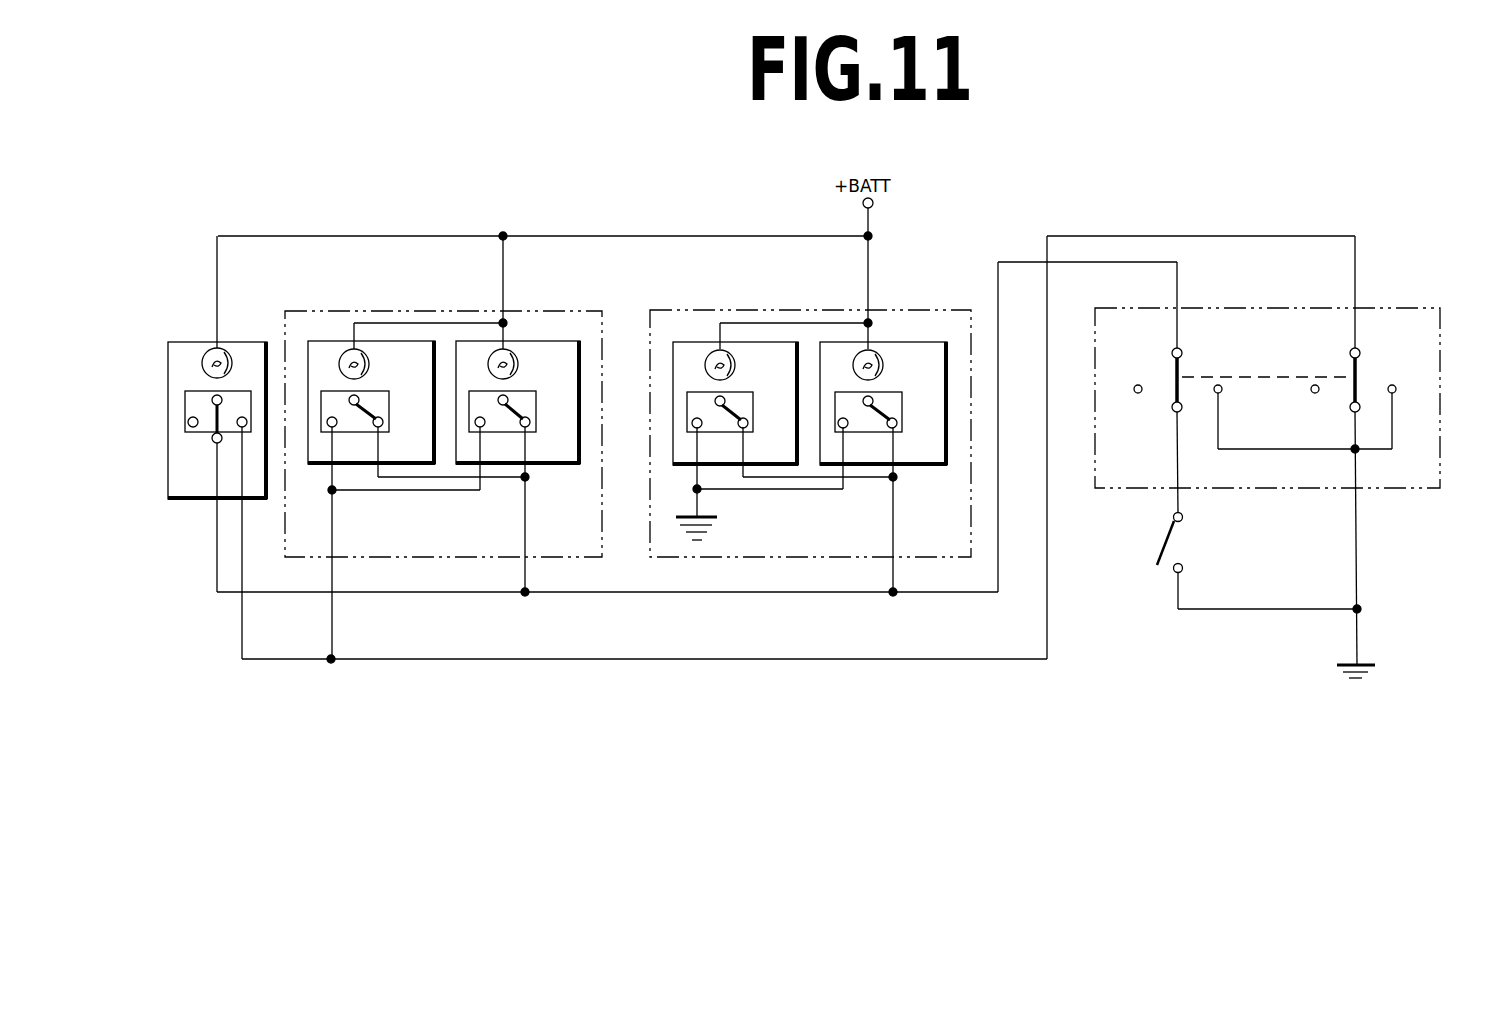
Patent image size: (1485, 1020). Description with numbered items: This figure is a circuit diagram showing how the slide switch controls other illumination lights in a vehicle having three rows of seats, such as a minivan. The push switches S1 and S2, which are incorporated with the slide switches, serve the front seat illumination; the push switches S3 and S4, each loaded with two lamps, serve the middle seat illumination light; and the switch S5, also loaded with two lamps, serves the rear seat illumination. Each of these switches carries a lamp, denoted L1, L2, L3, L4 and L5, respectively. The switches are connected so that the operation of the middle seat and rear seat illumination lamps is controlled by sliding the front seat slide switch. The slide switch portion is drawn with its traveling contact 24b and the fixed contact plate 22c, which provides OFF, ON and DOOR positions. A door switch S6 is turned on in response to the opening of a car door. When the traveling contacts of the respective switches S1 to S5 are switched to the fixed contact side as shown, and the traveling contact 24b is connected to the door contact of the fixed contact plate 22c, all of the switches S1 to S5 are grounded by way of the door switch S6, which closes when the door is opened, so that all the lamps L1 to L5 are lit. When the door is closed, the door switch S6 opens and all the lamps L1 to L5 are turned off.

The push switch S1 is at (922, 342).
The push switch S2 is at (686, 342).
The push switch S3 is at (545, 341).
The push switch S4 is at (332, 341).
The switch S5 is at (196, 341).
The door switch S6 is at (1257, 561).
The lamp L1 is at (881, 372).
The lamp L2 is at (733, 372).
The lamp L3 is at (516, 371).
The lamp L4 is at (367, 371).
The lamp L5 is at (230, 358).
The traveling contact 24b is at (1360, 350).
The fixed contact plate 22c is at (1396, 391).